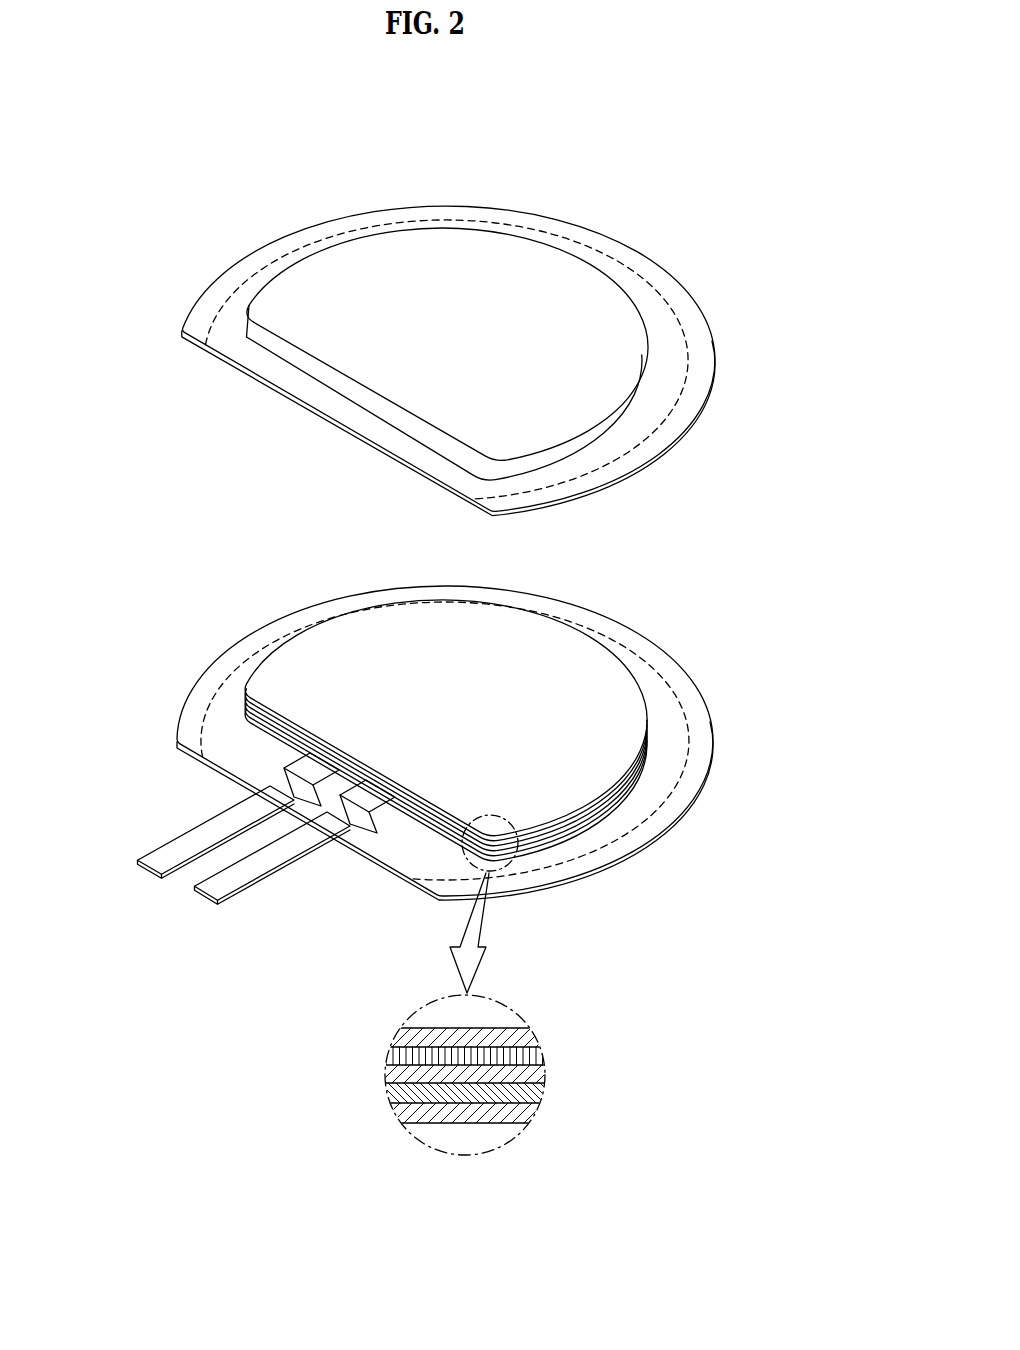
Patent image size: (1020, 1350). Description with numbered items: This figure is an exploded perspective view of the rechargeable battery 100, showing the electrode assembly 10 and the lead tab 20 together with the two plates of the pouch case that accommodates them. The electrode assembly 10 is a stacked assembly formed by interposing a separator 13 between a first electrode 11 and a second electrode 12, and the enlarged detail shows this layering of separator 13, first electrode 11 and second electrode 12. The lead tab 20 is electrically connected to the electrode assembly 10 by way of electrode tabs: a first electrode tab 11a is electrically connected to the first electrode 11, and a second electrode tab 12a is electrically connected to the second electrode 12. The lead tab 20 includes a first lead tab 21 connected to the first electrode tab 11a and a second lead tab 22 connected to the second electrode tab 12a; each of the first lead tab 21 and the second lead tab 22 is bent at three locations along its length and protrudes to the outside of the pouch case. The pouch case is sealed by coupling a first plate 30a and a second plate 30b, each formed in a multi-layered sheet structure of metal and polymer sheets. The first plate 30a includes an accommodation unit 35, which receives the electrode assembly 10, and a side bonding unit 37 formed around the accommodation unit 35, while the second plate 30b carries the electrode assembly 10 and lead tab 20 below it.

The rechargeable battery 100 is at (462, 134).
The electrode assembly 10 is at (600, 636).
The first electrode 11 is at (400, 1056).
The first electrode tab 11a is at (397, 799).
The second electrode 12 is at (400, 1094).
The second electrode tab 12a is at (308, 758).
The separator 13 is at (530, 1112).
The lead tab 20 is at (226, 873).
The first lead tab 21 is at (210, 897).
The second lead tab 22 is at (150, 873).
The first plate 30a is at (660, 297).
The second plate 30b is at (670, 682).
The accommodation unit 35 is at (512, 240).
The side bonding unit 37 is at (713, 350).